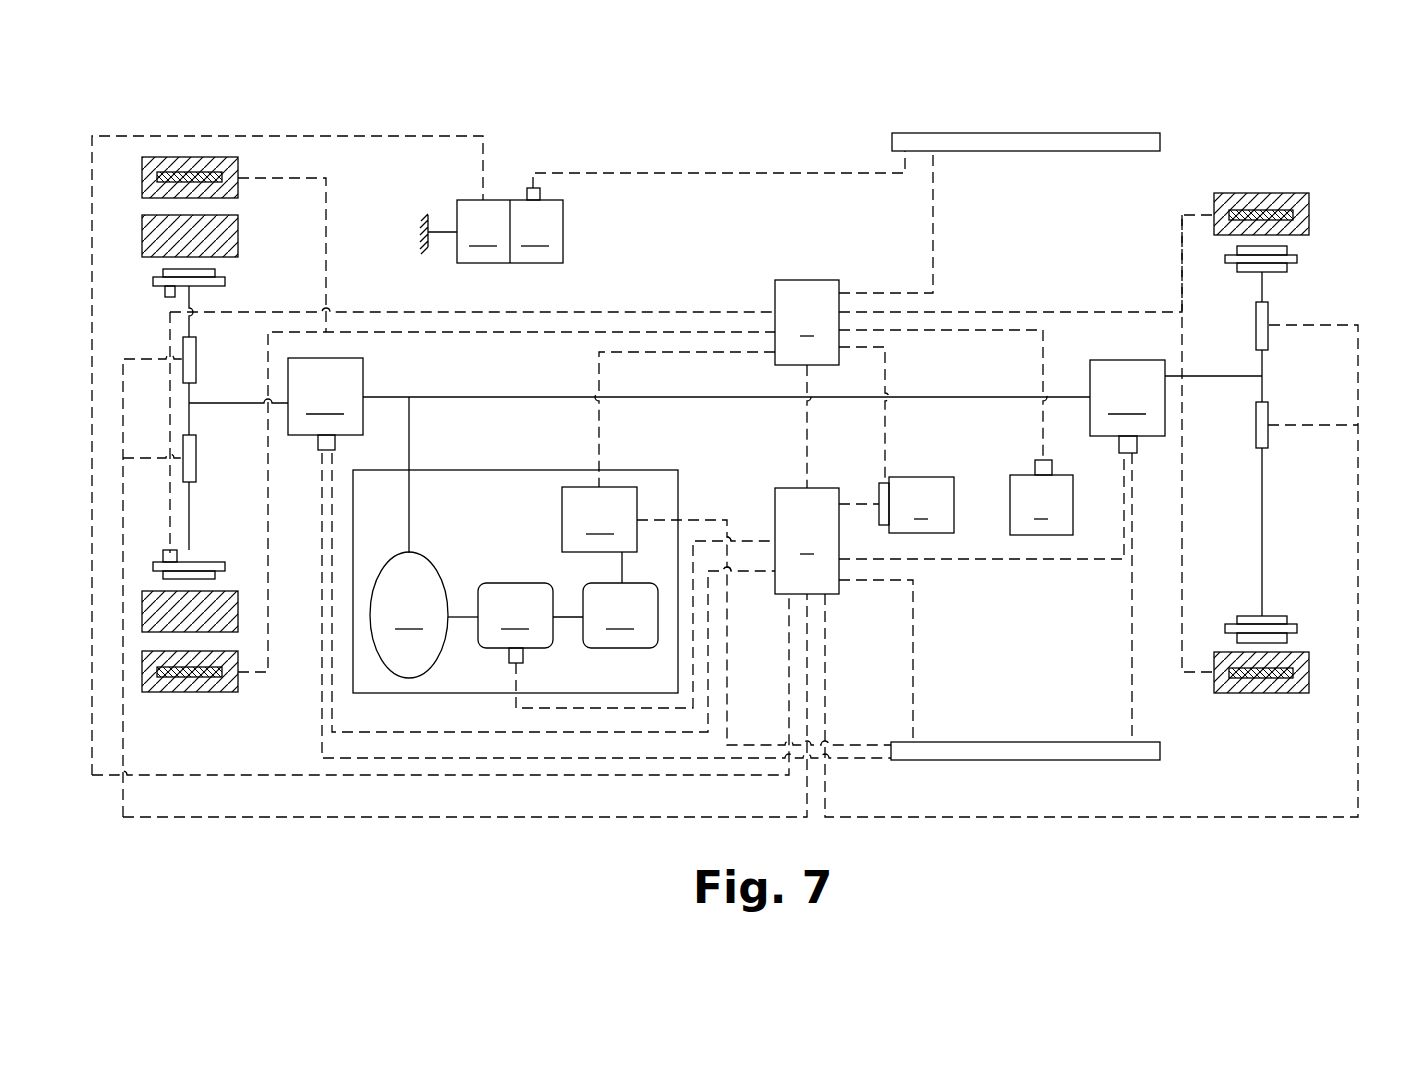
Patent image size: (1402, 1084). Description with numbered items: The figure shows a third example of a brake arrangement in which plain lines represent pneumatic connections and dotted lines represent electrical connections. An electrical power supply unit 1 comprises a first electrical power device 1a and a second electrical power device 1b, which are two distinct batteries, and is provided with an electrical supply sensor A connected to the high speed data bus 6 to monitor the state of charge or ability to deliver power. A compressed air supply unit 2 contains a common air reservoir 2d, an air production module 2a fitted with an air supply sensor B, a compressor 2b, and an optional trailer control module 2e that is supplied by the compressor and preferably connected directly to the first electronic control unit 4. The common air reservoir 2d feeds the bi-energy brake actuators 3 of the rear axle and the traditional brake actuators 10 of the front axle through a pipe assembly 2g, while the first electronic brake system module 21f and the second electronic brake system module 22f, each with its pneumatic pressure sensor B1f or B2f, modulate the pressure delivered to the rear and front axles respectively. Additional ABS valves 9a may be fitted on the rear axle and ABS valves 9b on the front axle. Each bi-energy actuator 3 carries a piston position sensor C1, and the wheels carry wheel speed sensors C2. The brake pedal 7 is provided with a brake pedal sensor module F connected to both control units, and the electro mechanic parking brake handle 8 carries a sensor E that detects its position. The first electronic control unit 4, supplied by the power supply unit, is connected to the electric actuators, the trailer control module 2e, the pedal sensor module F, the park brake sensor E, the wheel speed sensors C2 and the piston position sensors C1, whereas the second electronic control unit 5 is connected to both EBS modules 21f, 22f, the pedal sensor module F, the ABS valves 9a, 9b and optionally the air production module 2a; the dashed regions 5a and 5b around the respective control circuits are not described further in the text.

The electrical power supply unit 1 is at (491, 188).
The first electrical power device 1a is at (489, 231).
The second electrical power device 1b is at (505, 198).
The electrical supply sensor A is at (546, 191).
The compressed air supply unit 2 is at (515, 607).
The air production module 2a is at (500, 615).
The compressor 2b is at (605, 600).
The common air reservoir 2d is at (409, 615).
The trailer control module 2e is at (599, 519).
The pipe assembly 2g is at (512, 396).
The air supply sensor B is at (503, 660).
The bi-energy brake actuator 3 is at (150, 281).
The first electronic control unit 4 is at (807, 322).
The second electronic control unit 5 is at (807, 541).
The first control region 5a is at (582, 818).
The second control region 5b is at (880, 818).
The high speed data bus 6 is at (938, 130).
The brake pedal 7 is at (921, 505).
The electro mechanic parking brake handle 8 is at (1041, 505).
The ABS valves 9a is at (197, 376).
The ABS valves 9b is at (1252, 330).
The traditional brake actuators 10 is at (1290, 270).
The first electronic brake system module 21f is at (325, 396).
The second electronic brake system module 22f is at (1127, 398).
The pneumatic pressure sensor B1f is at (318, 446).
The pneumatic pressure sensor B2f is at (1142, 449).
The piston position sensor C1 is at (160, 294).
The wheel speed sensor C2 is at (140, 178).
The sensor E is at (1056, 466).
The brake pedal sensor module F is at (878, 481).